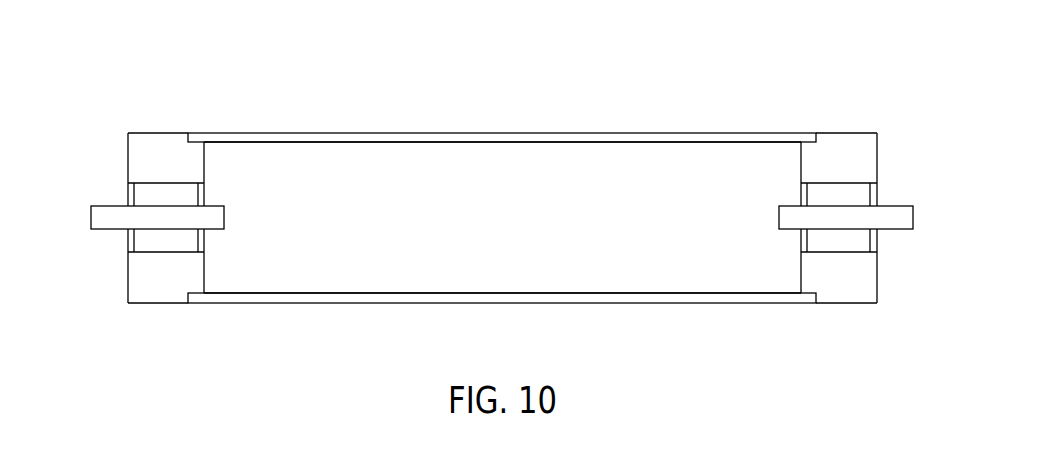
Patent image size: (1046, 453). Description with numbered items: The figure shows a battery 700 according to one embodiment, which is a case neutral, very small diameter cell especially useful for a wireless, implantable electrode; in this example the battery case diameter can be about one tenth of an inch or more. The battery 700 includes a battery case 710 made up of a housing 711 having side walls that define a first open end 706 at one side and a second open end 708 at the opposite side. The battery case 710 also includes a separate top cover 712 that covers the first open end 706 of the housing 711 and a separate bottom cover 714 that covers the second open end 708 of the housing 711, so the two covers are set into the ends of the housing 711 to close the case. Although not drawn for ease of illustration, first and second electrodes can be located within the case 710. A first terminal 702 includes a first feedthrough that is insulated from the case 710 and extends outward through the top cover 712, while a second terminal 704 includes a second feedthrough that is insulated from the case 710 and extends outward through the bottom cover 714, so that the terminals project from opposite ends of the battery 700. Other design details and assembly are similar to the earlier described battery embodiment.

The battery 700 is at (810, 42).
The first terminal 702 is at (105, 220).
The second terminal 704 is at (898, 220).
The first open end 706 is at (273, 157).
The second open end 708 is at (732, 278).
The battery case 710 is at (293, 312).
The housing 711 is at (643, 138).
The top cover 712 is at (142, 280).
The bottom cover 714 is at (862, 162).